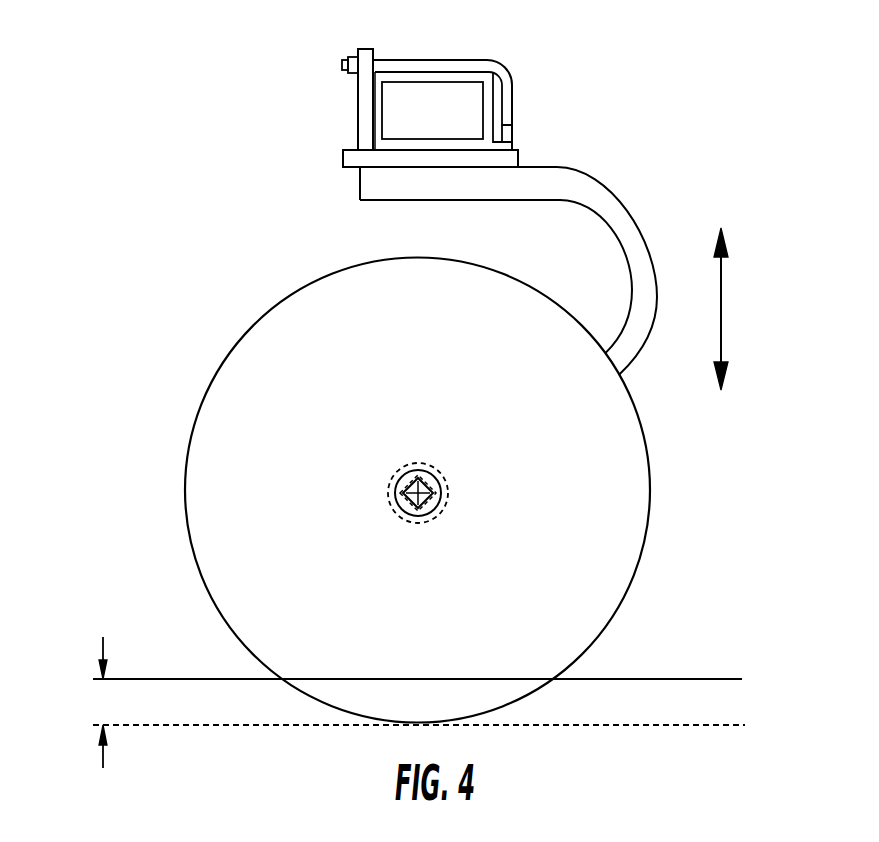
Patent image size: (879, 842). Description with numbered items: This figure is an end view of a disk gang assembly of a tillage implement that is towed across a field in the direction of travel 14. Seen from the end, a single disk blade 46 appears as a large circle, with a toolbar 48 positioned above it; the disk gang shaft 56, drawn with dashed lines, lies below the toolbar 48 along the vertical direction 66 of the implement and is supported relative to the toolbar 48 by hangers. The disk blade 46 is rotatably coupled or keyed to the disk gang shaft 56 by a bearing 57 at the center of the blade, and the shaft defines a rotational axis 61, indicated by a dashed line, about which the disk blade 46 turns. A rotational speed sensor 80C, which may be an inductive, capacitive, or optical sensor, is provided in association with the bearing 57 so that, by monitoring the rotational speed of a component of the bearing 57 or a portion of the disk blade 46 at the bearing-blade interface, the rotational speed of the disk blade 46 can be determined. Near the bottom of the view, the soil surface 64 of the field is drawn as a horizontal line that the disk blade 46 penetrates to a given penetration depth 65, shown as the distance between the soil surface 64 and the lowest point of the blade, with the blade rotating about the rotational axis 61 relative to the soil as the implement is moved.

The direction of travel 14 is at (542, 0).
The toolbar 48 is at (418, 80).
The vertical direction 66 is at (722, 312).
The disk blade 46 is at (633, 487).
The bearing 57 is at (430, 465).
The rotational speed sensor 80C is at (402, 467).
The rotational axis 61 is at (403, 513).
The disk gang shaft 56 is at (422, 502).
The penetration depth 65 is at (100, 652).
The soil surface 64 is at (160, 679).